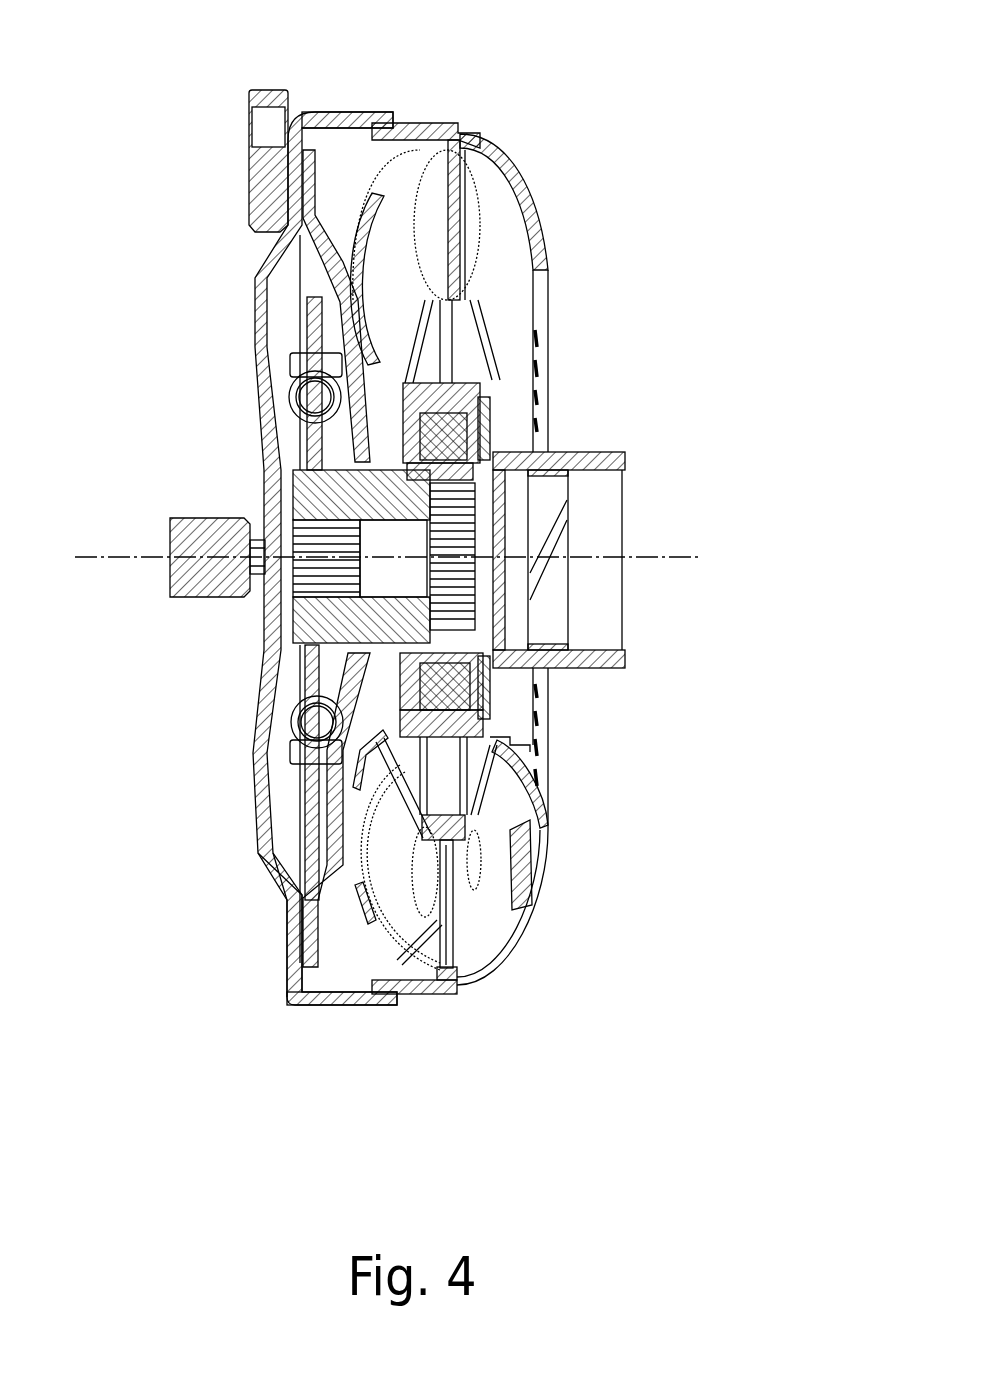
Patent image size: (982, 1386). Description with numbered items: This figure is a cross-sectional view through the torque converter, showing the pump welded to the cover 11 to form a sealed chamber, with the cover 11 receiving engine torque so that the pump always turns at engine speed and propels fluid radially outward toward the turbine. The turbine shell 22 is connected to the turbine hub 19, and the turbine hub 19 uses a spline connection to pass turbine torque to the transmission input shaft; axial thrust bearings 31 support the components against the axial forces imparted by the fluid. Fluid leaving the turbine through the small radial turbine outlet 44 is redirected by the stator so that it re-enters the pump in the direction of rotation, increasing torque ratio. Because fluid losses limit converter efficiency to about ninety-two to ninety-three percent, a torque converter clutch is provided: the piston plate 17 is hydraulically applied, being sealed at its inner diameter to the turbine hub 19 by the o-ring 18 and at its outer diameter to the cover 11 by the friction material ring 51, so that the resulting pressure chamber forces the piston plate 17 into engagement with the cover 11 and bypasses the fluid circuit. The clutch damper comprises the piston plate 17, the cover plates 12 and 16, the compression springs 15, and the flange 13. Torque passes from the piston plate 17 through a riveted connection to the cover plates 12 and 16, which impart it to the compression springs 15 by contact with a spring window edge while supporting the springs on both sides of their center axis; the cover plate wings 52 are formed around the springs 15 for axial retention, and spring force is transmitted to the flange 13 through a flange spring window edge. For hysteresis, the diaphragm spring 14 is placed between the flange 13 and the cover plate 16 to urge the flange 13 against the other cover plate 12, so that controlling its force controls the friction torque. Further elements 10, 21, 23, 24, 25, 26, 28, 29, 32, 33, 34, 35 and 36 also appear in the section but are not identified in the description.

The clutch assembly 10 is at (555, 152).
The cover 11 is at (253, 293).
The cover plate 12 is at (302, 350).
The flange 13 is at (268, 862).
The diaphragm spring 14 is at (303, 447).
The compression springs 15 is at (292, 727).
The cover plate 16 is at (300, 352).
The piston plate 17 is at (317, 238).
The o-ring 18 is at (335, 607).
The turbine hub 19 is at (330, 618).
The support ring 21 is at (497, 732).
The turbine shell 22 is at (403, 183).
The spring 23 is at (377, 180).
The spring washer 24 is at (425, 178).
The lever 25 is at (485, 320).
The lower bearing block 26 is at (450, 690).
The seal 28 is at (503, 640).
The seal 29 is at (487, 440).
The axial thrust bearings 31 is at (540, 445).
The retaining plate 32 is at (478, 143).
The outer ring 33 is at (535, 215).
The intermediate plate 34 is at (500, 217).
The flange 35 is at (603, 452).
The sleeve 36 is at (550, 505).
The turbine outlet 44 is at (422, 788).
The friction material ring 51 is at (292, 938).
The cover plate wings 52 is at (258, 822).